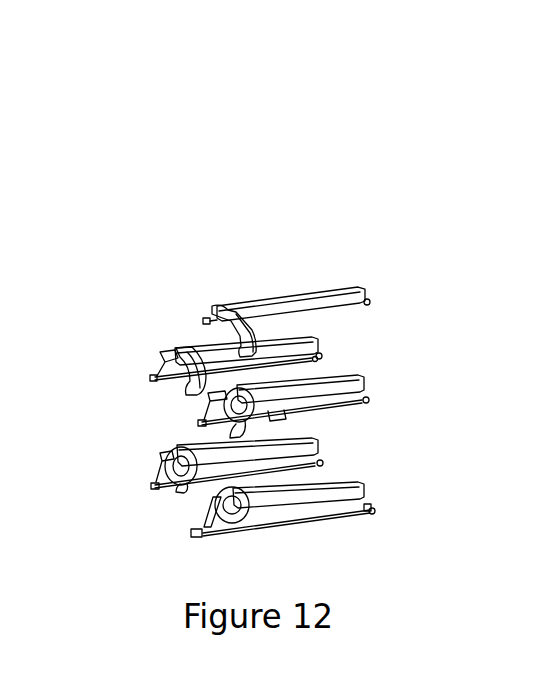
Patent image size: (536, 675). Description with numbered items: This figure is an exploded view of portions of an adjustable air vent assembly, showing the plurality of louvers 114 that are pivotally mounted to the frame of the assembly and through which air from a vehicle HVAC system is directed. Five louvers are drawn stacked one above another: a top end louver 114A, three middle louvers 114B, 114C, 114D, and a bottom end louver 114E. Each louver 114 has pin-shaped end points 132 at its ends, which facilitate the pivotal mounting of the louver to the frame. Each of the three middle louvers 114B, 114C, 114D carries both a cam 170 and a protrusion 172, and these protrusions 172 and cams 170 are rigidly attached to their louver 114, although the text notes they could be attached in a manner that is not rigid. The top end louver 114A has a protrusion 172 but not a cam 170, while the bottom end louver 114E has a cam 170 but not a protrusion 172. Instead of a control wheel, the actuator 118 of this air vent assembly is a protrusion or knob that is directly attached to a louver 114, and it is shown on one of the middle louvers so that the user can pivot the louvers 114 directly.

The louvers 114 is at (283, 314).
The top end louver 114A is at (327, 302).
The middle louver 114B is at (313, 340).
The middle louver 114C is at (348, 392).
The middle louver 114D is at (312, 446).
The bottom end louver 114E is at (356, 492).
The actuator 118 is at (288, 408).
The pin-shaped end points 132 is at (203, 320).
The cam 170 is at (186, 390).
The protrusion 172 is at (223, 307).